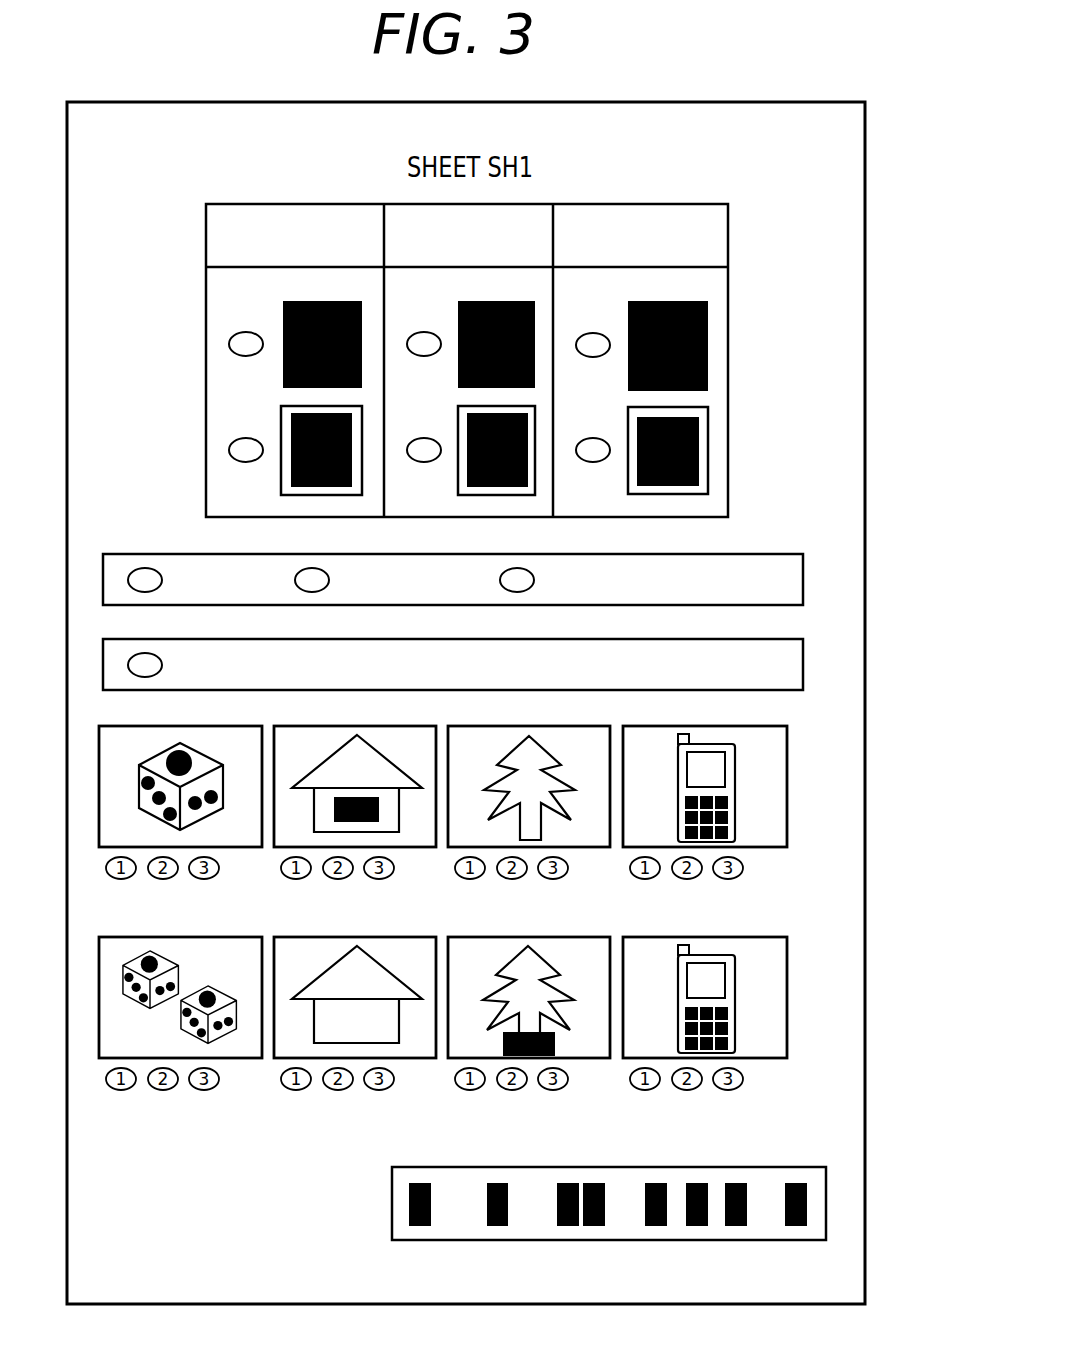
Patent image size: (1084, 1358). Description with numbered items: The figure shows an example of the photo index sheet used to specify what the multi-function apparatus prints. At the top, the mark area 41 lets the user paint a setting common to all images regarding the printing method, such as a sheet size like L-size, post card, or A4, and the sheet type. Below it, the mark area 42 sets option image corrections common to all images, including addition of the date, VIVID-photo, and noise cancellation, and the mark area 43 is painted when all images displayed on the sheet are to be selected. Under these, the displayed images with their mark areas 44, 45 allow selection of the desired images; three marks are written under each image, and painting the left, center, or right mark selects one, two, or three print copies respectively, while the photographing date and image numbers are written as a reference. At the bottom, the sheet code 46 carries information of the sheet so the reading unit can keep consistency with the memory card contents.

The mark area to select the sheet size/type 41 is at (728, 337).
The mark area to set the image processes 42 is at (803, 581).
The mark area to set all of the images to the print targets 43 is at (803, 665).
The mark area to select the images 44 is at (788, 792).
The mark area to select the images 45 is at (790, 887).
The sheet code 46 is at (826, 1203).